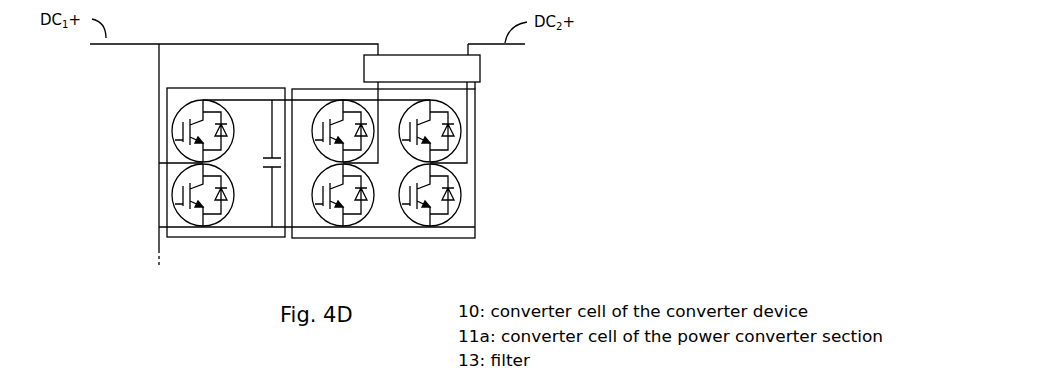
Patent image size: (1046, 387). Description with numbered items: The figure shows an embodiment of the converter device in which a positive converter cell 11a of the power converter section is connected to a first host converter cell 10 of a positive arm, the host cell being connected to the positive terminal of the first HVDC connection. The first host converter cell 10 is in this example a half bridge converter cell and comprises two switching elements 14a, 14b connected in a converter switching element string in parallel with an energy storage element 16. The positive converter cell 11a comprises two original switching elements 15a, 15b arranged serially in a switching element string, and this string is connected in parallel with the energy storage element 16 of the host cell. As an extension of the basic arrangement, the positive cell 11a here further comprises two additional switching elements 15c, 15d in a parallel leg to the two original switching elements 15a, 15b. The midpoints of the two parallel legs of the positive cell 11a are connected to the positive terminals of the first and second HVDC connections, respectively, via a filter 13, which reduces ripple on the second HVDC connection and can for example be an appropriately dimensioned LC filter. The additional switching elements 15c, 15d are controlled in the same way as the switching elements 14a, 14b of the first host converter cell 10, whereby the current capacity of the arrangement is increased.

The first host converter cell 10 is at (169, 189).
The positive converter cell 11a is at (475, 171).
The filter 13 is at (431, 77).
The switching element 14a is at (172, 163).
The switching element 14b is at (235, 205).
The switching element 15a is at (476, 139).
The switching element 15b is at (475, 207).
The additional switching element 15c is at (324, 103).
The additional switching element 15d is at (316, 212).
The energy storage element 16 is at (276, 172).